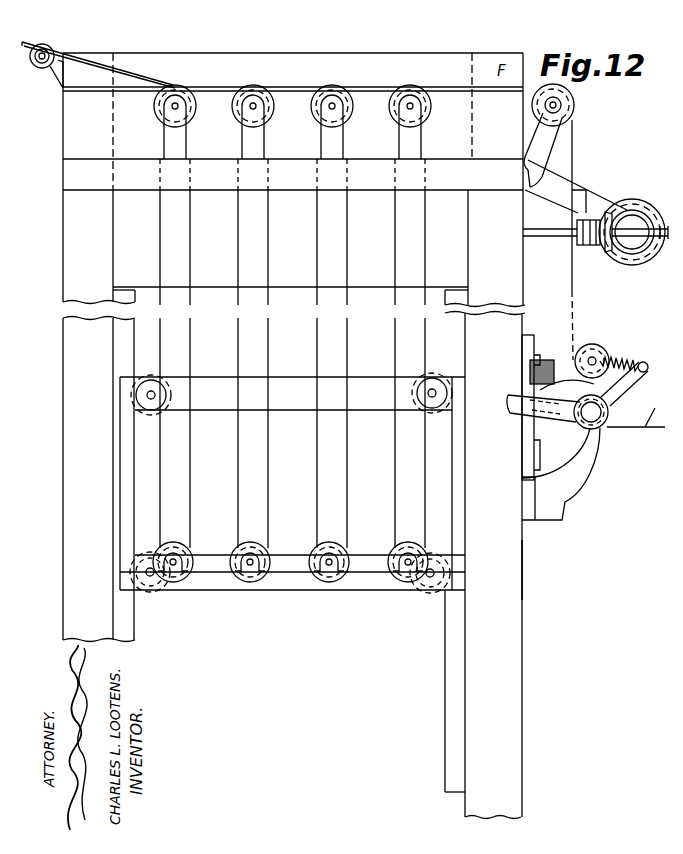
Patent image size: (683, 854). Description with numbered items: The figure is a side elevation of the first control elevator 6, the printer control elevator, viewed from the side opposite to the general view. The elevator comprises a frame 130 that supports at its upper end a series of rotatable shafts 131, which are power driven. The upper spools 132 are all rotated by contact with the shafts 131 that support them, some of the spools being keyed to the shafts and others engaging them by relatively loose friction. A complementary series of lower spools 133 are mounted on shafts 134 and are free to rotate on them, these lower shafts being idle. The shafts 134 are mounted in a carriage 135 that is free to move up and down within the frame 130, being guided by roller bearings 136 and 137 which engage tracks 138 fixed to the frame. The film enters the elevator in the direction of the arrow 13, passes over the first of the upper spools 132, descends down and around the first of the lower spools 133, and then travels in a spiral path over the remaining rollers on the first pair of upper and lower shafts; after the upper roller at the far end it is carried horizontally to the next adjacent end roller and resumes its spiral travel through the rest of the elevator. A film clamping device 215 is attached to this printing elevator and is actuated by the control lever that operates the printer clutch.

The first control elevator 6 is at (530, 561).
The arrow 13 is at (616, 146).
The frame 130 is at (63, 610).
The rotatable shafts 131 is at (413, 106).
The upper spools 132 is at (345, 94).
The lower spools 133 is at (387, 572).
The shafts 134 is at (326, 569).
The carriage 135 is at (268, 586).
The roller bearings 136 is at (140, 412).
The roller bearings 137 is at (145, 556).
The tracks 138 is at (130, 488).
The film clamping device 215 is at (593, 457).